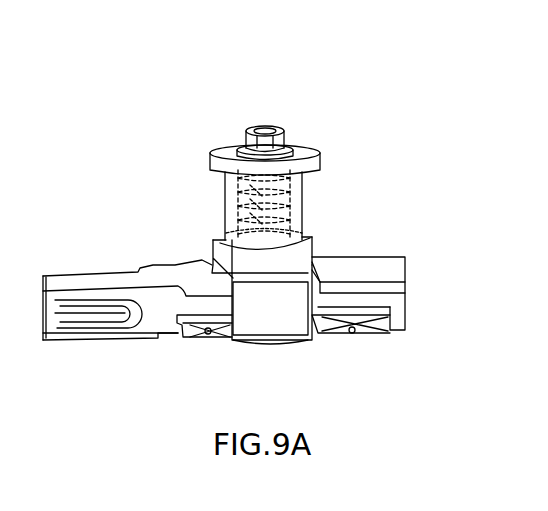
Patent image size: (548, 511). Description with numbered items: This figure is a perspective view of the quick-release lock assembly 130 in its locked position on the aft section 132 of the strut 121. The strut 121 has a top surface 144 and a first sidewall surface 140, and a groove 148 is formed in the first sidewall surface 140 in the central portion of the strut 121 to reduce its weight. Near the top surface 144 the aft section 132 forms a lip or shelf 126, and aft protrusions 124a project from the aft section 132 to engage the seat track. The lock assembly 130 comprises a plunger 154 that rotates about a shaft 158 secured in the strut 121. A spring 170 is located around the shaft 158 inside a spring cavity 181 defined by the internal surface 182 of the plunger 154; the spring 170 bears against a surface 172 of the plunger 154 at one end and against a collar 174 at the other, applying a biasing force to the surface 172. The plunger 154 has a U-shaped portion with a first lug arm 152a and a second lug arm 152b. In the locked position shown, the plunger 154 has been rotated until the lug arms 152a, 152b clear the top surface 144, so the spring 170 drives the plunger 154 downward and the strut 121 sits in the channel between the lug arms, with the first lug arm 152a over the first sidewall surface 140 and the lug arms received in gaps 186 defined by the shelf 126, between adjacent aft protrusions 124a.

The aft section 132 is at (133, 72).
The lock assembly 130 is at (215, 140).
The collar 174 is at (285, 148).
The spring 170 is at (226, 201).
The spring cavity 181 is at (306, 193).
The plunger 154 is at (306, 208).
The internal surface 182 is at (295, 221).
The surface 172 is at (302, 232).
The second lug arm 152b is at (210, 262).
The shaft 158 is at (277, 284).
The first lug arm 152a is at (263, 343).
The strut 121 is at (140, 270).
The groove 148 is at (78, 312).
The first sidewall surface 140 is at (160, 337).
The aft protrusions 124a is at (204, 346).
The shelf 126 is at (392, 288).
The top surface 144 is at (365, 276).
The gaps 186 is at (320, 280).